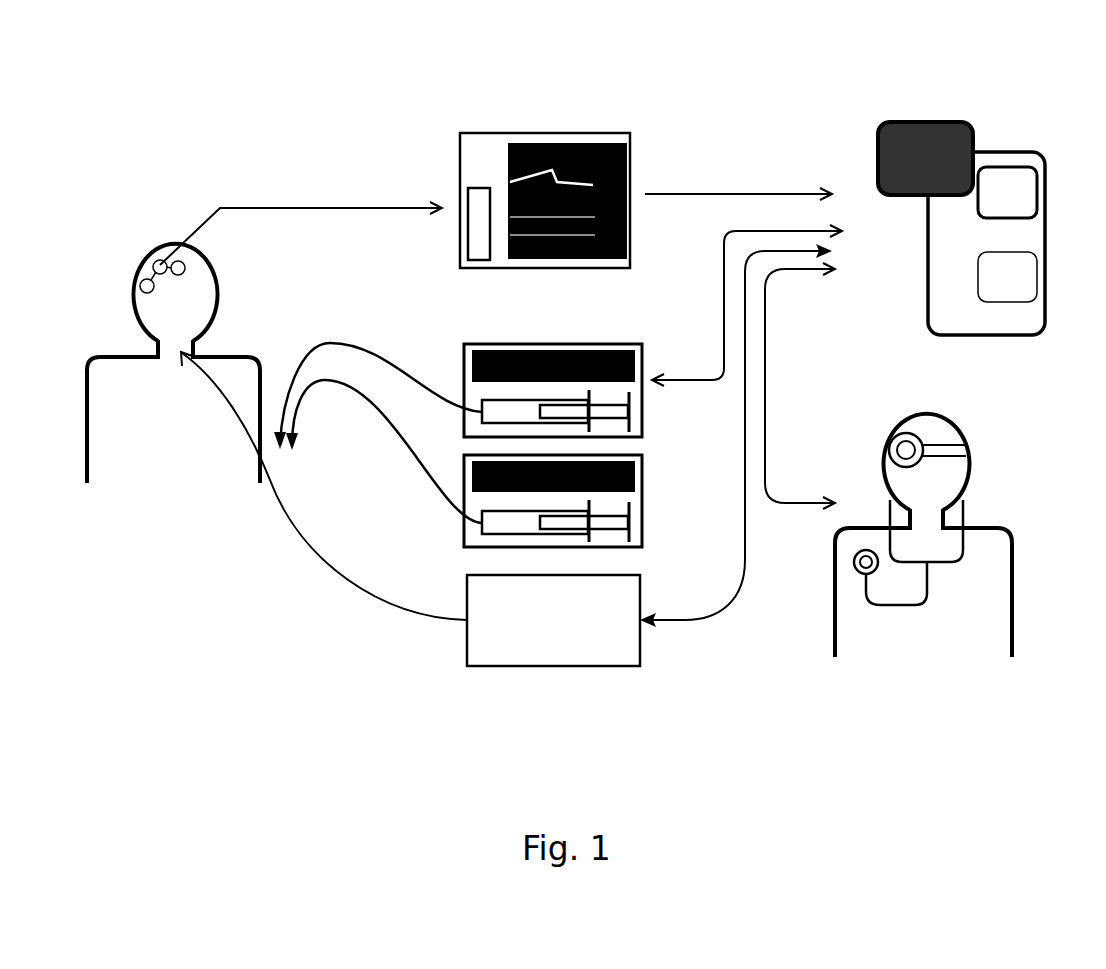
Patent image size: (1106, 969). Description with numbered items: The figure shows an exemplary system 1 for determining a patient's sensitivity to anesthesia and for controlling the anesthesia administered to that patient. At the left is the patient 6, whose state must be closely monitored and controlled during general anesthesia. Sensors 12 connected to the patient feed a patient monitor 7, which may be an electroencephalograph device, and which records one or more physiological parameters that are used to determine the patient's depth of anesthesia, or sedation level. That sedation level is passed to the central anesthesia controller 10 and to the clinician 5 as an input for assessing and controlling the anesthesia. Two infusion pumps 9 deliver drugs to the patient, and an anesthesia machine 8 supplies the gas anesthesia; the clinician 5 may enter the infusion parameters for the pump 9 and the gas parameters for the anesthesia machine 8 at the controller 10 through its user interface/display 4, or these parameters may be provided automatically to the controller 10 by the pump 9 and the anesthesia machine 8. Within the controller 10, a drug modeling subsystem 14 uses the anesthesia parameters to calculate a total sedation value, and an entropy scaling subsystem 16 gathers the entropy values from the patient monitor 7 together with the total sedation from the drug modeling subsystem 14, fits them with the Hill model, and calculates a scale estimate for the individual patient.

The system 1 is at (756, 74).
The user interface/display 4 is at (941, 130).
The clinician 5 is at (1000, 581).
The patient 6 is at (215, 298).
The patient monitor 7 is at (620, 156).
The anesthesia machine 8 is at (634, 611).
The infusion pump 9 is at (640, 406).
The central anesthesia controller 10 is at (1045, 163).
The sensors 12 is at (159, 260).
The drug modeling subsystem 14 is at (1020, 198).
The entropy scaling subsystem 16 is at (1020, 285).